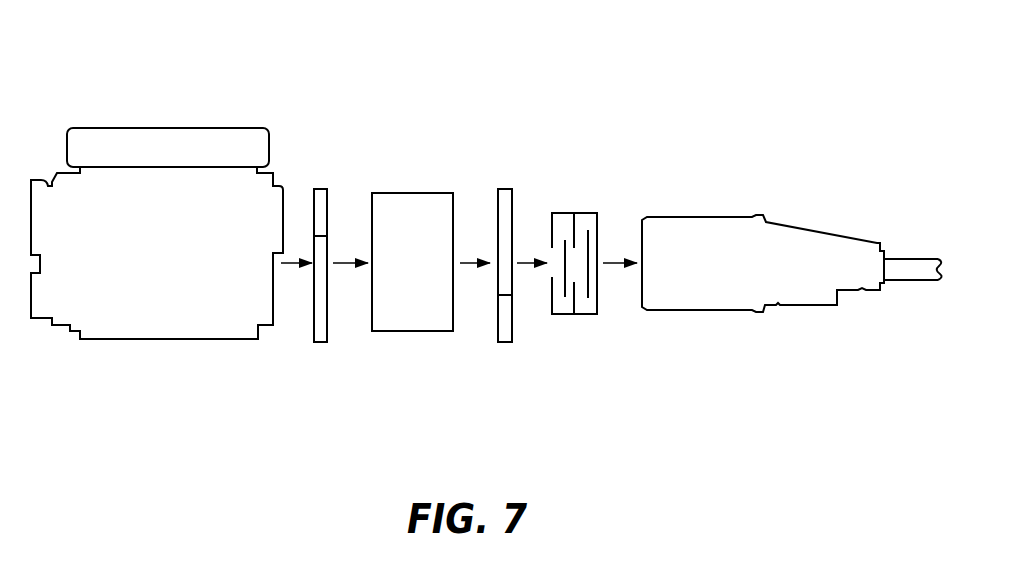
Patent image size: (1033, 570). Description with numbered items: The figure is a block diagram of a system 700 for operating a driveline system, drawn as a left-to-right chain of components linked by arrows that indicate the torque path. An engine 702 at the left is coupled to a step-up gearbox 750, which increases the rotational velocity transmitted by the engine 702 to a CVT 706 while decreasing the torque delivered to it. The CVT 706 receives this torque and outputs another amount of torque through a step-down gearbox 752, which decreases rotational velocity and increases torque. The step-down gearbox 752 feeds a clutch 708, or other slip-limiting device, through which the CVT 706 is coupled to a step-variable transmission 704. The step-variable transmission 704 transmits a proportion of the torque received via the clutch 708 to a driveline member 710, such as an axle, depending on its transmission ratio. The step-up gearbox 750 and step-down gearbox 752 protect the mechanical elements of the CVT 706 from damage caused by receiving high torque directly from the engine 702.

The system 700 is at (110, 92).
The engine 702 is at (187, 262).
The step-variable transmission 704 is at (762, 275).
The CVT 706 is at (428, 270).
The clutch 708 is at (583, 318).
The driveline member 710 is at (912, 285).
The step-up gearbox 750 is at (323, 187).
The step-down gearbox 752 is at (507, 187).